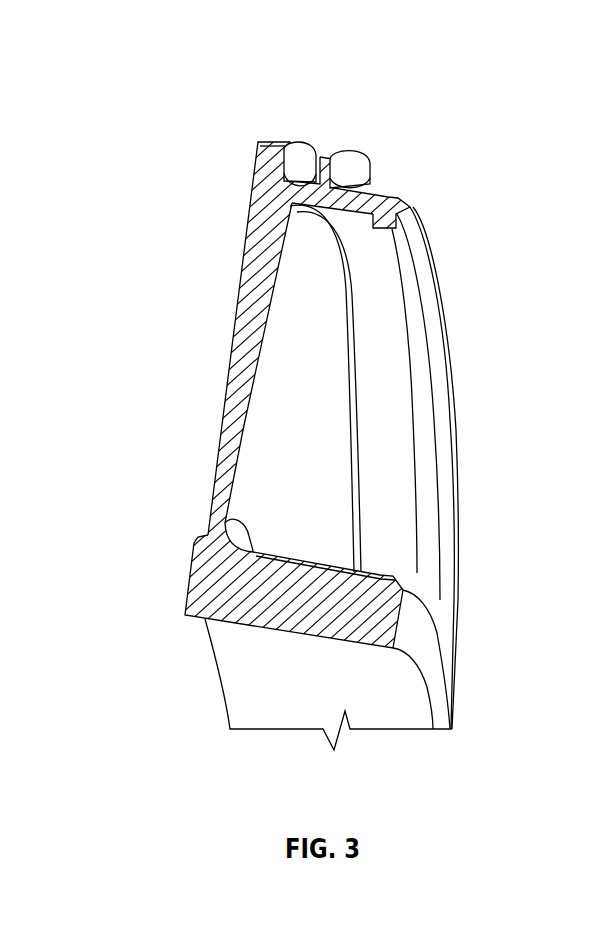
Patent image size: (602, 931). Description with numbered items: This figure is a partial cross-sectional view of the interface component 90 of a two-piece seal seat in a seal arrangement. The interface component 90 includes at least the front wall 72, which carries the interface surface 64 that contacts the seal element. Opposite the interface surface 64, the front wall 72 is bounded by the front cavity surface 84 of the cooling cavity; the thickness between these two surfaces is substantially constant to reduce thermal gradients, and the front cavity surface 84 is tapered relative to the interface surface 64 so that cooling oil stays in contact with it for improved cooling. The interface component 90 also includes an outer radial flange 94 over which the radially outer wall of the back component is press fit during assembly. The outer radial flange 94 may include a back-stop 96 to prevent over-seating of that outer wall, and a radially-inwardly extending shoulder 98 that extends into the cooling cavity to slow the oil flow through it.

The interface component 90 is at (503, 145).
The interface surface 64 is at (241, 272).
The front cavity surface 84 is at (257, 330).
The front wall 72 is at (240, 392).
The back-stop 96 is at (326, 152).
The outer radial flange 94 is at (358, 200).
The radially-inwardly extending shoulder 98 is at (396, 222).